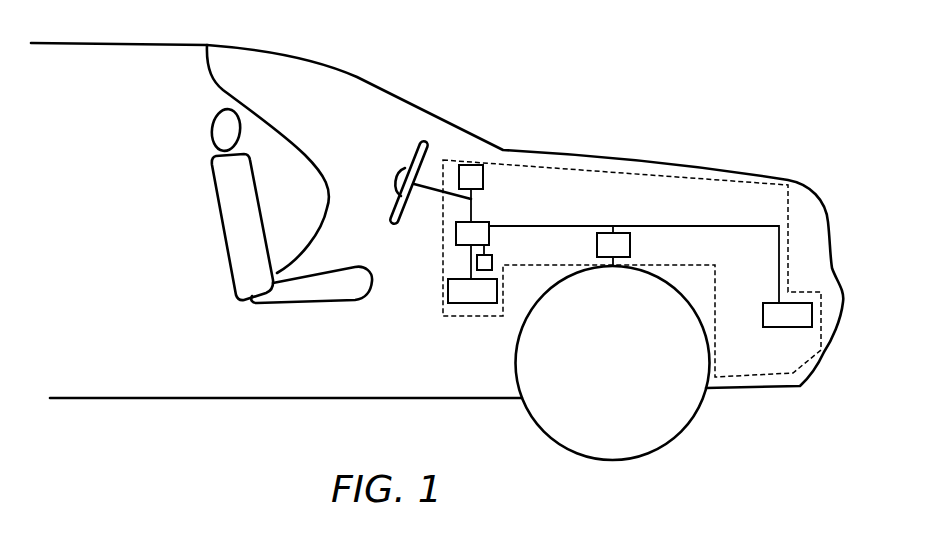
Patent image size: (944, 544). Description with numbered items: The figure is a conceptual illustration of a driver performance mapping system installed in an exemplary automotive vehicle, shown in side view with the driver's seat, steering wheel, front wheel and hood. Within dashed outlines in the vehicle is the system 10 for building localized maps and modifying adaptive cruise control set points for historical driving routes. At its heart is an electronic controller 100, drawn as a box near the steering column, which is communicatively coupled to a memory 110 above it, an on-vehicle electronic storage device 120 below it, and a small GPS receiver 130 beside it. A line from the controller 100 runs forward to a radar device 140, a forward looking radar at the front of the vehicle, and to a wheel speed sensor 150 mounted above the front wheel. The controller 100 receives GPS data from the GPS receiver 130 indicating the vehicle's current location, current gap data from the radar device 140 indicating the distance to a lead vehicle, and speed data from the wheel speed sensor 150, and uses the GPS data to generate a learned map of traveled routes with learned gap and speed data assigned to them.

The system 10 is at (468, 317).
The electronic controller 100 is at (480, 222).
The memory 110 is at (473, 164).
The on-vehicle electronic storage device 120 is at (448, 290).
The GPS receiver 130 is at (494, 262).
The radar device 140 is at (797, 328).
The wheel speed sensor 150 is at (631, 240).